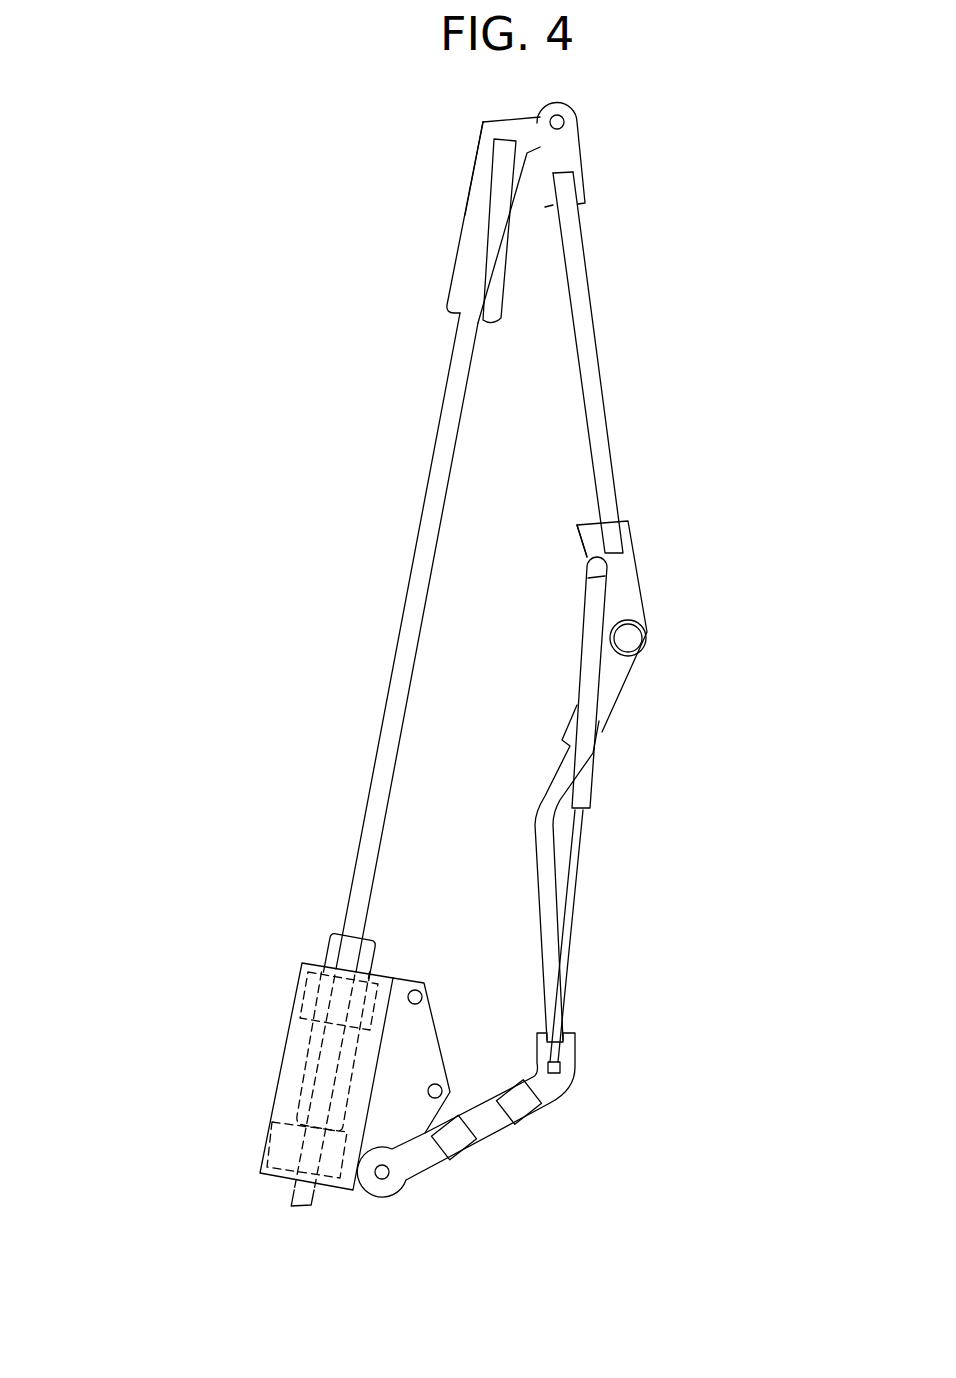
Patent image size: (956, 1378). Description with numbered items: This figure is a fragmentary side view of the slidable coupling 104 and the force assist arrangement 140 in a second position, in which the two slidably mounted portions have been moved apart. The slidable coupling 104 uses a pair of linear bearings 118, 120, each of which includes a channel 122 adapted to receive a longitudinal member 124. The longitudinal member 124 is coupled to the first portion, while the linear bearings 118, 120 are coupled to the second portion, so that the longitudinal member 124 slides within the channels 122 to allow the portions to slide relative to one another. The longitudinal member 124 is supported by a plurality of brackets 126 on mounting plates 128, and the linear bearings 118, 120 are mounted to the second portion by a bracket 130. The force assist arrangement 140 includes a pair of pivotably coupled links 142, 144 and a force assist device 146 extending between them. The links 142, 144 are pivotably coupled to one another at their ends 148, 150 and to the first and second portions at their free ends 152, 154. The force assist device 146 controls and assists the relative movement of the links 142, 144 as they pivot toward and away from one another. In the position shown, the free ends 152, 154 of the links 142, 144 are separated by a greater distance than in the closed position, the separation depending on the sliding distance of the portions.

The slidable coupling 104 is at (262, 1076).
The linear bearing 118 is at (283, 1155).
The linear bearing 120 is at (300, 993).
The channel 122 is at (467, 203).
The longitudinal member 124 is at (387, 704).
The bracket 126 is at (488, 163).
The mounting plate 128 is at (483, 122).
The bracket 130 is at (297, 1005).
The force assist arrangement 140 is at (550, 556).
The first link 142 is at (596, 333).
The second link 144 is at (535, 827).
The force assist device 146 is at (583, 615).
The end 148 is at (641, 592).
The end 150 is at (632, 676).
The free end 152 is at (578, 121).
The free end 154 is at (386, 1180).